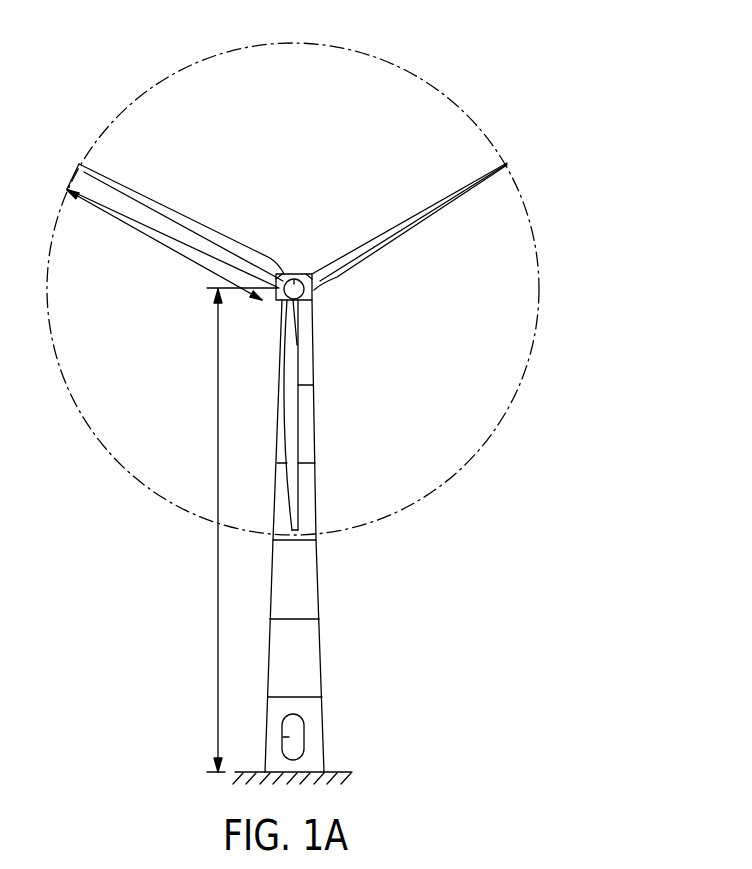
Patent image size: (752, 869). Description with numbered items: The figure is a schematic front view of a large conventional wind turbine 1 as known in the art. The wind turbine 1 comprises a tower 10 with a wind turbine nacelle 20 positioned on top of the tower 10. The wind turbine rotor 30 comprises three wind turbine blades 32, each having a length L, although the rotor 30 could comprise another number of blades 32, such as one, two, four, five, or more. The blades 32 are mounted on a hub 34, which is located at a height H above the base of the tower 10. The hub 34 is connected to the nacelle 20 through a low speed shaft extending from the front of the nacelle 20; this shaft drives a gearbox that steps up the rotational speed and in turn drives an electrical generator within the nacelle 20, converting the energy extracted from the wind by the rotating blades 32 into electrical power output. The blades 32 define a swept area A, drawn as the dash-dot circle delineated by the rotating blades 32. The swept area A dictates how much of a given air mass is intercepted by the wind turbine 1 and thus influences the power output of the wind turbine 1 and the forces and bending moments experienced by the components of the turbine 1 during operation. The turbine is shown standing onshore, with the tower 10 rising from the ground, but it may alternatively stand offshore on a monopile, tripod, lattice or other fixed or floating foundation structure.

The wind turbine 1 is at (466, 64).
The tower 10 is at (318, 583).
The wind turbine nacelle 20 is at (313, 292).
The wind turbine rotor 30 is at (91, 158).
The wind turbine blades 32 is at (452, 198).
The hub 34 is at (268, 312).
The swept area A is at (479, 470).
The height H is at (240, 530).
The length L is at (155, 241).